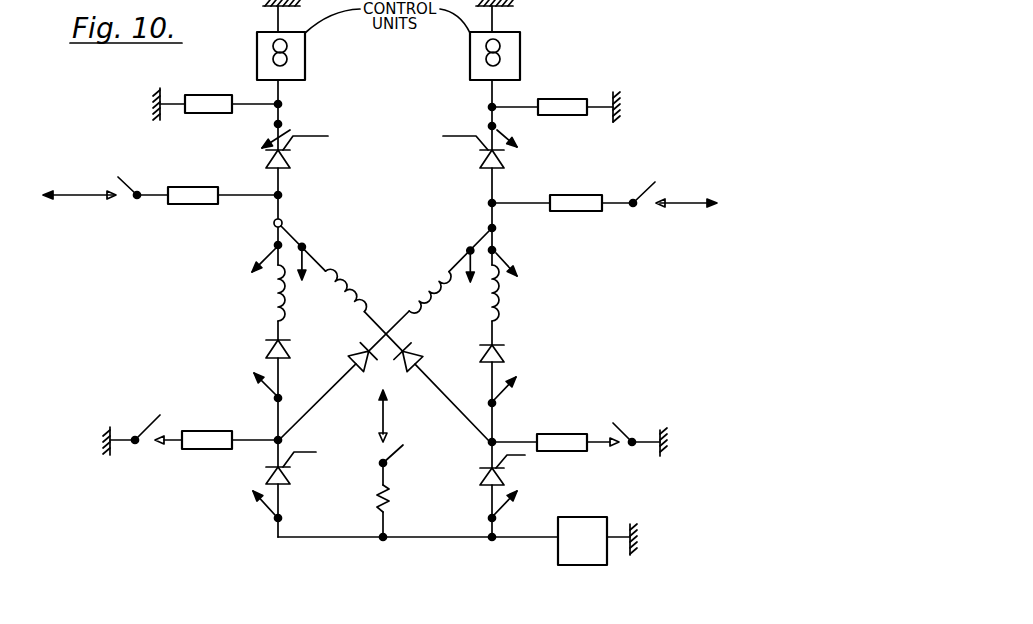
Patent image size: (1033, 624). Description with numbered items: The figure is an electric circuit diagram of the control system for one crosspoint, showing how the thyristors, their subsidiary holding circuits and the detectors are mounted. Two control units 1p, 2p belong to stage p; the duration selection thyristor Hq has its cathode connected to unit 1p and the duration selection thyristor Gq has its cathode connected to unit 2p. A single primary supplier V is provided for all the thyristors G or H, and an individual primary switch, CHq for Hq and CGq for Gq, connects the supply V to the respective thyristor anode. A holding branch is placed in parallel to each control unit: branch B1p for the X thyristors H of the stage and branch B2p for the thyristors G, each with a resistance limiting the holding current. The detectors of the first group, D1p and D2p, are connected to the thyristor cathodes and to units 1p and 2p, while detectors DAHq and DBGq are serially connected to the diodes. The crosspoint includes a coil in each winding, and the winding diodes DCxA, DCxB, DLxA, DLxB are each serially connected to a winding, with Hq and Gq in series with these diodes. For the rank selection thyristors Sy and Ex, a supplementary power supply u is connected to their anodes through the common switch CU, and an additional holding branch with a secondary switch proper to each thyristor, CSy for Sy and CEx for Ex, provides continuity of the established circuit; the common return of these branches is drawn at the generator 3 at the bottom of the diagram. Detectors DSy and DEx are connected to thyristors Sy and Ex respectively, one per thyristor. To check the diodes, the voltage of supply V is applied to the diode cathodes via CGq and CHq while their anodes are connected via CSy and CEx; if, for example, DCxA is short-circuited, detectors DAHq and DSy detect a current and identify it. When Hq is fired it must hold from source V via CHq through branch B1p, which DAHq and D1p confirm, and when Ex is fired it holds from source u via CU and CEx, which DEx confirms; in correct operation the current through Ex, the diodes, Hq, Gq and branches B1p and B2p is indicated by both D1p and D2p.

The control unit 1p is at (306, 70).
The control unit 2p is at (470, 68).
The generator 3 is at (591, 517).
The holding branch B1p is at (170, 102).
The detector D1p is at (207, 113).
The holding branch B2p is at (600, 105).
The detector D2p is at (568, 116).
The duration selection thyristor Hq is at (298, 150).
The duration selection thyristor Gq is at (479, 151).
The primary switch CHq is at (120, 178).
The detector DAHq is at (180, 205).
The primary switch CGq is at (645, 190).
The detector DBGq is at (645, 227).
The primary supplier V is at (389, 192).
The winding diode DCxA is at (242, 315).
The winding diode DCxB is at (341, 329).
The winding diode DLxA is at (427, 336).
The winding diode DLxB is at (500, 349).
The rank selection thyristor Sy is at (288, 445).
The detector DSy is at (193, 451).
The secondary switch CSy is at (131, 421).
The supplementary power supply u is at (393, 413).
The common switch CU is at (399, 491).
The rank selection thyristor Ex is at (507, 447).
The detector DEx is at (560, 434).
The secondary switch CEx is at (626, 433).